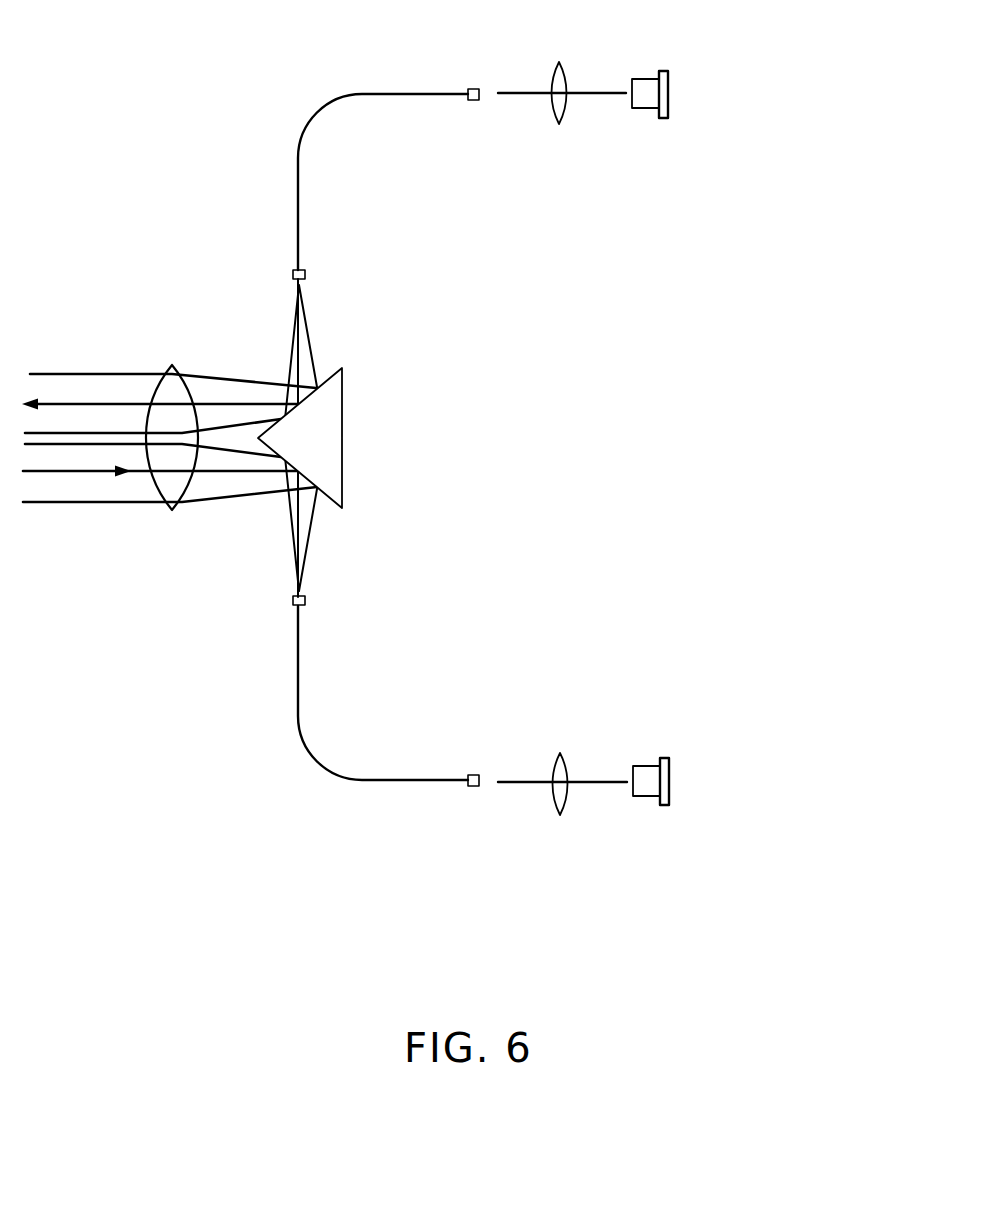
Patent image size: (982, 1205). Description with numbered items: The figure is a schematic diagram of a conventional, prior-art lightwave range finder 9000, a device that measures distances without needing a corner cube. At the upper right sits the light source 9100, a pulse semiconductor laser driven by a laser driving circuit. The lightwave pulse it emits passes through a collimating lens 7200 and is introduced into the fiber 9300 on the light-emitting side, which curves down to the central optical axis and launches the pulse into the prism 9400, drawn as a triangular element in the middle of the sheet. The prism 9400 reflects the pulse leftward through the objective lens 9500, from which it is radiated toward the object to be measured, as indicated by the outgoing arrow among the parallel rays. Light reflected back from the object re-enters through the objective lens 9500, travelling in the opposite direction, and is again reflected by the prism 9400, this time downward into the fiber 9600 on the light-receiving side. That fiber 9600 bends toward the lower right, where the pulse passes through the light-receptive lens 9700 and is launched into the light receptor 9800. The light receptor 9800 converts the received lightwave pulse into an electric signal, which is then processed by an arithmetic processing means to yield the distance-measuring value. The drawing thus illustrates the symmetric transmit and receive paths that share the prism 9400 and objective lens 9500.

The lightwave range finder 9000 is at (292, 804).
The light source 9100 is at (667, 85).
The lens 7200 is at (560, 68).
The fiber on the light-emitting side 9300 is at (333, 97).
The prism 9400 is at (338, 427).
The objective lens 9500 is at (172, 365).
The fiber on the light-receiving side 9600 is at (322, 757).
The light-receptive lens 9700 is at (560, 753).
The light receptor 9800 is at (670, 762).